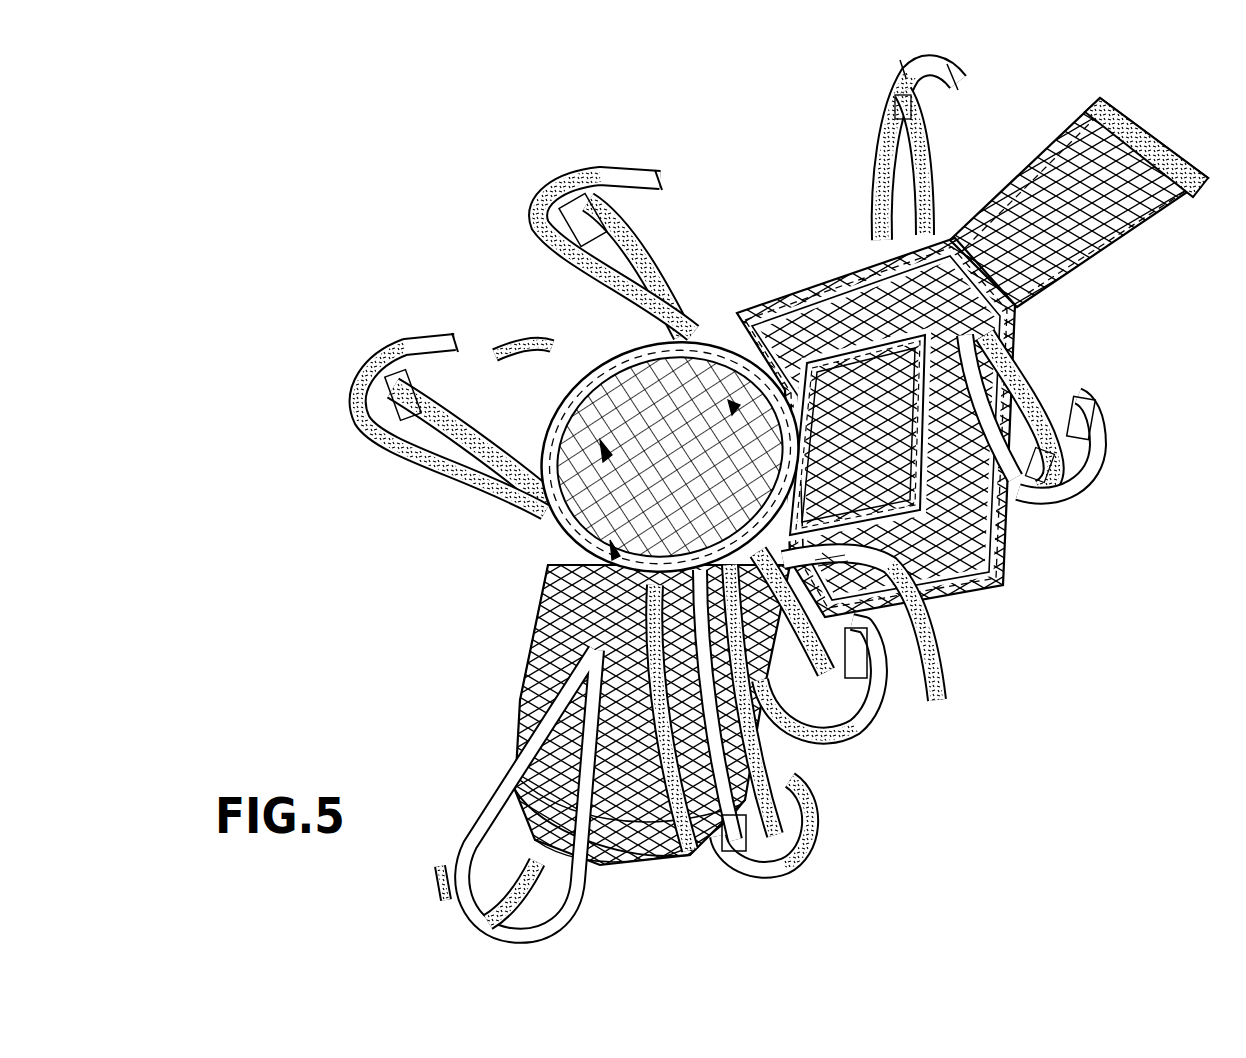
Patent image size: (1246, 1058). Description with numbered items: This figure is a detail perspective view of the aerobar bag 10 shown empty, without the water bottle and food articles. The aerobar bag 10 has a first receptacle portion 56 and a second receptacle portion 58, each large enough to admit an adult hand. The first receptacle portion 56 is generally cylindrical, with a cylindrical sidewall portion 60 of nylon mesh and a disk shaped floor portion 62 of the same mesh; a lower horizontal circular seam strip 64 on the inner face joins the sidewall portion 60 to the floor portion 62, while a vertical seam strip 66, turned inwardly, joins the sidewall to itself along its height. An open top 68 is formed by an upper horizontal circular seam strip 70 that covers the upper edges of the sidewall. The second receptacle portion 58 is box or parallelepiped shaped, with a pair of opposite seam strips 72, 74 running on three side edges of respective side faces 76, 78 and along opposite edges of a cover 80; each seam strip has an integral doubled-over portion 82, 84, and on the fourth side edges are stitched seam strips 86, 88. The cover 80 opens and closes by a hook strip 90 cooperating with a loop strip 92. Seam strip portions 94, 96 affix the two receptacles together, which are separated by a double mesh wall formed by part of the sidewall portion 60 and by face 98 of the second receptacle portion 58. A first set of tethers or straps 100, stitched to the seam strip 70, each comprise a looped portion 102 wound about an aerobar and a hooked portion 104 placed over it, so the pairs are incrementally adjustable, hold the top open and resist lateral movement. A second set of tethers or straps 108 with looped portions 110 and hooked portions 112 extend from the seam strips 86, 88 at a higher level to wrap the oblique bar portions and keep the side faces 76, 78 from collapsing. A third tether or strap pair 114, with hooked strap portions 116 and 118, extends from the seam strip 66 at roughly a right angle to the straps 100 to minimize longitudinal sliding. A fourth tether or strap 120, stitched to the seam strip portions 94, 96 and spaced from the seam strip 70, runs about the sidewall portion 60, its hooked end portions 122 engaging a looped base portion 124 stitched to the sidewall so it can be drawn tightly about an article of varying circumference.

The aerobar bag 10 is at (455, 249).
The first receptacle portion 56 is at (497, 690).
The second receptacle portion 58 is at (1062, 358).
The cylindrical sidewall portion 60 is at (566, 597).
The disk shaped floor portion 62 is at (597, 840).
The lower horizontal circular seam strip 64 is at (648, 842).
The vertical seam strip 66 is at (615, 552).
The open top 68 is at (606, 445).
The upper horizontal circular seam strip 70 is at (717, 528).
The seam strip 72 is at (799, 466).
The seam strip 74 is at (1017, 165).
The side face 76 is at (857, 435).
The side face 78 is at (871, 290).
The cover 80 is at (1040, 220).
The doubled-over portion 82 is at (830, 390).
The doubled-over portion 84 is at (737, 312).
The seam strip 86 is at (898, 367).
The seam strip 88 is at (818, 282).
The hook strip 90 is at (1150, 150).
The loop strip 92 is at (817, 340).
The seam strip portion 94 is at (812, 532).
The seam strip portion 96 is at (697, 393).
The face 98 is at (737, 437).
The first set of tethers or straps 100 is at (578, 172).
The looped tether or strap portion 102 is at (640, 247).
The hooked tether or strap portion 104 is at (540, 241).
The second set of tethers or straps 108 is at (858, 88).
The looped Velcro portion 110 is at (930, 133).
The hooked Velcro portion 112 is at (875, 165).
The third tether or strap pair 114 is at (410, 876).
The hooked Velcro strap portion 116 is at (438, 886).
The hooked Velcro strap portion 118 is at (514, 882).
The fourth tether or strap 120 is at (735, 405).
The hooked Velcro end portion 122 is at (540, 340).
The looped Velcro base portion 124 is at (528, 616).